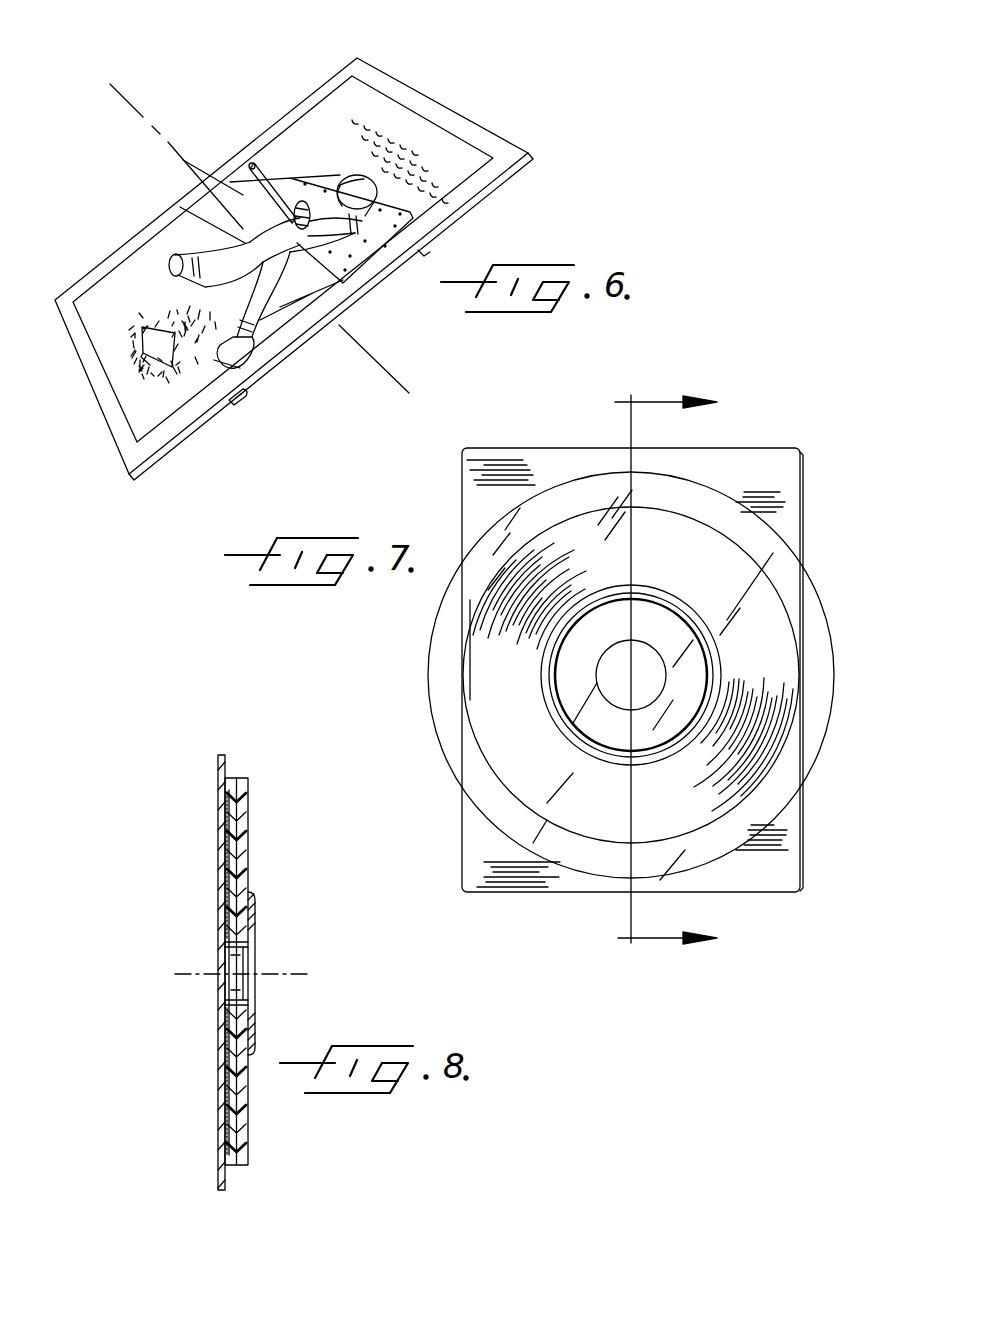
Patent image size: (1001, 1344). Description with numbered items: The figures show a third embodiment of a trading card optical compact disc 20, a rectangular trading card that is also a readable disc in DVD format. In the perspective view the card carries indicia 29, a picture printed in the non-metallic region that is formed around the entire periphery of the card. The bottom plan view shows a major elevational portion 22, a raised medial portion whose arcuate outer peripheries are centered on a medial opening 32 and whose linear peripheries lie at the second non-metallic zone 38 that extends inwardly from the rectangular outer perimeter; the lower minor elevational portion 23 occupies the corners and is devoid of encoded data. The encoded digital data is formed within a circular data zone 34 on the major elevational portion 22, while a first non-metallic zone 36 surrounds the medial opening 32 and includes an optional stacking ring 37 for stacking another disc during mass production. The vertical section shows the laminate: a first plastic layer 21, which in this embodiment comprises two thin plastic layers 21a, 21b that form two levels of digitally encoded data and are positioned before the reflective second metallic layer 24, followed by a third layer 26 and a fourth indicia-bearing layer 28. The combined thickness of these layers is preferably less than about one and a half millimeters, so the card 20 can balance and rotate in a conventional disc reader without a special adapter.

In FIG. 6, the trading card optical compact disc 20 is at (492, 72).
In FIG. 7, the trading card optical compact disc 20 is at (765, 348).
In FIG. 8, the trading card optical compact disc 20 is at (226, 949).
In FIG. 6, the indicia 29 is at (452, 175).
In FIG. 7, the second non-metallic zone 38 is at (806, 482).
In FIG. 7, the major elevational portion 22 is at (556, 761).
In FIG. 7, the minor elevational portion 23 is at (790, 881).
In FIG. 7, the medial opening 32 is at (651, 680).
In FIG. 8, the medial opening 32 is at (295, 973).
In FIG. 7, the first non-metallic zone 36 is at (683, 706).
In FIG. 7, the stacking ring 37 is at (690, 730).
In FIG. 7, the circular data zone 34 is at (722, 765).
In FIG. 8, the first plastic layer 21 is at (232, 783).
In FIG. 8, the plastic layer 21a is at (240, 1165).
In FIG. 8, the plastic layer 21b is at (230, 1168).
In FIG. 8, the third layer 26 is at (224, 757).
In FIG. 8, the second metallic layer 24 is at (238, 827).
In FIG. 8, the fourth indicia-bearing layer 28 is at (222, 848).